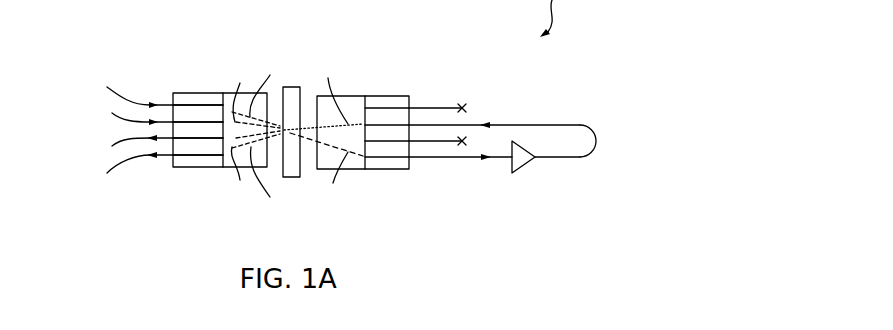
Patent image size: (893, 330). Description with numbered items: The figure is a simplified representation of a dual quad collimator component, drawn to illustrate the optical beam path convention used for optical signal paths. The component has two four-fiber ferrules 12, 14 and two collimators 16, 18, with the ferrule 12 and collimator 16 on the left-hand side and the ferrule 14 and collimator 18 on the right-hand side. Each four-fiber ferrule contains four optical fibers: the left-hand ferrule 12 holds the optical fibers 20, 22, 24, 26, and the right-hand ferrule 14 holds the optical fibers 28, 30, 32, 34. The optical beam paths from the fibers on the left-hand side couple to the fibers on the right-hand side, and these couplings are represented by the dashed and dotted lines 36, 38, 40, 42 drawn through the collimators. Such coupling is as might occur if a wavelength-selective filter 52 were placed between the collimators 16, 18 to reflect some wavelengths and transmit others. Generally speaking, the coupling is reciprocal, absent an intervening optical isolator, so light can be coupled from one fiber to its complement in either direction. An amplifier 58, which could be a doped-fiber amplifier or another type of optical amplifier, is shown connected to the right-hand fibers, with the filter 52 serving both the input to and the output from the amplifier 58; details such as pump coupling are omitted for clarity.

The four-fiber ferrule 12 is at (202, 168).
The four-fiber ferrule 14 is at (387, 96).
The collimator 16 is at (235, 93).
The collimator 18 is at (352, 96).
The optical fiber 20 is at (108, 87).
The optical fiber 22 is at (112, 113).
The optical fiber 24 is at (112, 146).
The optical fiber 26 is at (107, 173).
The optical fiber 28 is at (458, 107).
The optical fiber 30 is at (543, 125).
The optical fiber 32 is at (458, 142).
The optical fiber 34 is at (417, 160).
The optical beam path 36 is at (264, 129).
The optical beam path 38 is at (334, 181).
The optical beam path 40 is at (236, 129).
The optical beam path 42 is at (331, 90).
The wavelength-selective filter 52 is at (293, 87).
The amplifier 58 is at (522, 168).